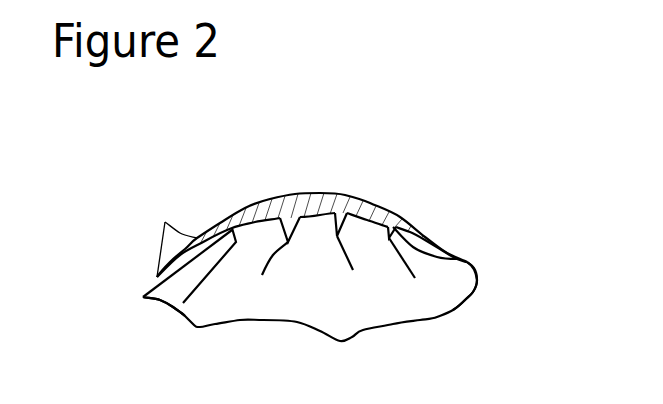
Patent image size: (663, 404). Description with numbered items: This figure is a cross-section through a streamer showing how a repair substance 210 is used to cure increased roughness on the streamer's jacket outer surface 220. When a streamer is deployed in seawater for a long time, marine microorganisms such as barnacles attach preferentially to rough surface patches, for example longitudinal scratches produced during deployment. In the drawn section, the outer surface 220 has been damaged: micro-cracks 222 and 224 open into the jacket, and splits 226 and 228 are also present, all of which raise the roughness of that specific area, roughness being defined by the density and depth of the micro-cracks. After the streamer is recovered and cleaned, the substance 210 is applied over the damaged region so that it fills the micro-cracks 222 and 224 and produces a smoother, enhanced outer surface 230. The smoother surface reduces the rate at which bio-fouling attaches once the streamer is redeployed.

The substance 210 is at (377, 213).
The jacket outer surface 220 is at (468, 262).
The micro-crack 222 is at (288, 242).
The micro-crack 224 is at (337, 236).
The split 226 is at (173, 307).
The split 228 is at (389, 238).
The enhanced outer surface 230 is at (169, 238).